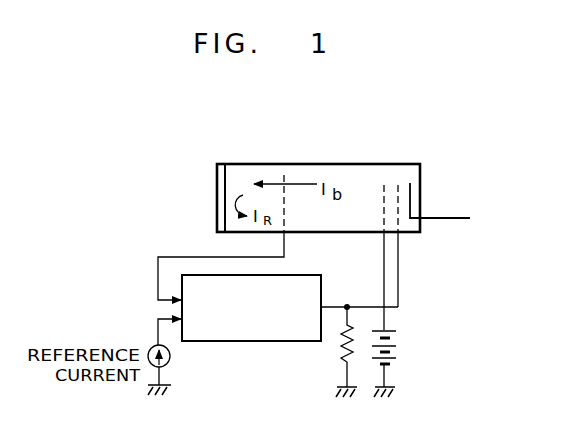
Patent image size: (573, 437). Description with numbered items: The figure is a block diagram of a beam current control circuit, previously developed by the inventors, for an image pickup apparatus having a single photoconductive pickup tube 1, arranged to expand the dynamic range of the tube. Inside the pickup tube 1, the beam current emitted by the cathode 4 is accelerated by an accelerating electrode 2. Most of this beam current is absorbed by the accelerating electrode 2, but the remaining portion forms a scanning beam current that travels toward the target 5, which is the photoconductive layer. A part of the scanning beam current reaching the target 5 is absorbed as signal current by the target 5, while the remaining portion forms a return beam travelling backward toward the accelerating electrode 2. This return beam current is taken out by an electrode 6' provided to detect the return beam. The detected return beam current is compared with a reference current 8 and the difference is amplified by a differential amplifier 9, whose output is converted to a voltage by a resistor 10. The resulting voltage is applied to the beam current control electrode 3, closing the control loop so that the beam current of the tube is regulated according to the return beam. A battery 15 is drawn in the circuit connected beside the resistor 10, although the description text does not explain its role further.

The pickup tube 1 is at (297, 164).
The accelerating electrode 2 is at (384, 185).
The beam current control electrode 3 is at (398, 185).
The cathode 4 is at (412, 194).
The target 5 is at (223, 164).
The electrode 6' is at (296, 203).
The reference current 8 is at (152, 347).
The differential amplifier 9 is at (253, 343).
The resistor 10 is at (341, 345).
The battery 15 is at (400, 344).